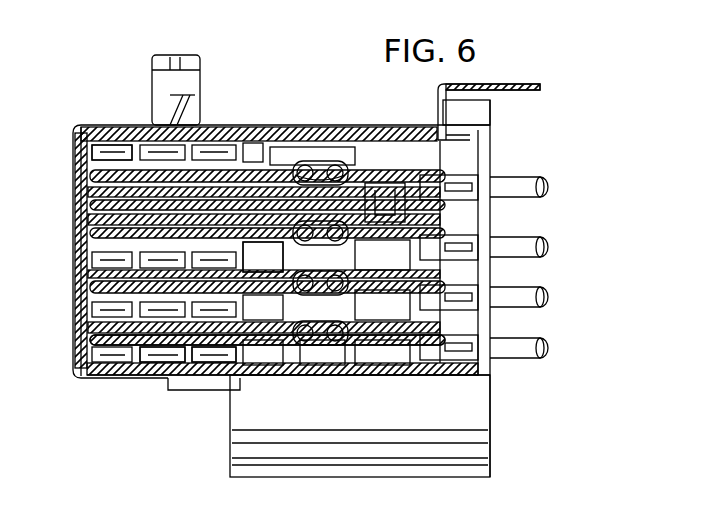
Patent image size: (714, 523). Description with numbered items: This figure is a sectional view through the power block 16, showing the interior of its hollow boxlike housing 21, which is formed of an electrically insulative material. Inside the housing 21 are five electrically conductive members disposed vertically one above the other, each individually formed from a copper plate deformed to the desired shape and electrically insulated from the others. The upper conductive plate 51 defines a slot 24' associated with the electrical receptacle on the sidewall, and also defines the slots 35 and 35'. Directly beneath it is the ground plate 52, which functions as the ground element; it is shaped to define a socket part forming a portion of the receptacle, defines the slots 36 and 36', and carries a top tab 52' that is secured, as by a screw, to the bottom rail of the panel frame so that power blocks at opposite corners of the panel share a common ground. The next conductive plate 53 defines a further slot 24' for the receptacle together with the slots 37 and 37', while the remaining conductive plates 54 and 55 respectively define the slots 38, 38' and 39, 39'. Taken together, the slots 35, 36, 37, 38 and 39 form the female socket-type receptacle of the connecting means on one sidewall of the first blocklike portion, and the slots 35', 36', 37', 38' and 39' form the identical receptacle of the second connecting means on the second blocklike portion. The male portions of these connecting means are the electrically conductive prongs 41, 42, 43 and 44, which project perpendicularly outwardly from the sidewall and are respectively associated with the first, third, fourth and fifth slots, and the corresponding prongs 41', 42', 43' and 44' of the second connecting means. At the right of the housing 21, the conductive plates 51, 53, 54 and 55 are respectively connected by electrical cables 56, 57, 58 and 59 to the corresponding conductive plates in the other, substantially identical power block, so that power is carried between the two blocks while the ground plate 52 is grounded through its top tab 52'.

The power block 16 is at (292, 82).
The housing 21 is at (478, 419).
The slot 24' is at (351, 203).
The slot 35 is at (177, 116).
The slot 36 is at (253, 152).
The slot 37 is at (263, 257).
The slot 38 is at (263, 307).
The slot 39 is at (267, 380).
The prong 41 is at (204, 87).
The prong 42 is at (263, 257).
The prong 43 is at (133, 388).
The prong 44 is at (185, 394).
The slot 35' is at (234, 169).
The slot 36' is at (234, 198).
The slot 37' is at (234, 228).
The slot 38' is at (234, 293).
The slot 39' is at (234, 352).
The prong 41' is at (77, 144).
The prong 42' is at (129, 260).
The prong 43' is at (129, 317).
The prong 44' is at (133, 379).
The upper conductive plate 51 is at (492, 160).
The ground plate 52 is at (329, 105).
The top tab 52' is at (489, 88).
The conductive plate 53 is at (455, 232).
The conductive plate 54 is at (460, 286).
The conductive plate 55 is at (455, 338).
The electrical cable 56 is at (522, 187).
The electrical cable 57 is at (530, 247).
The electrical cable 58 is at (522, 297).
The electrical cable 59 is at (512, 350).